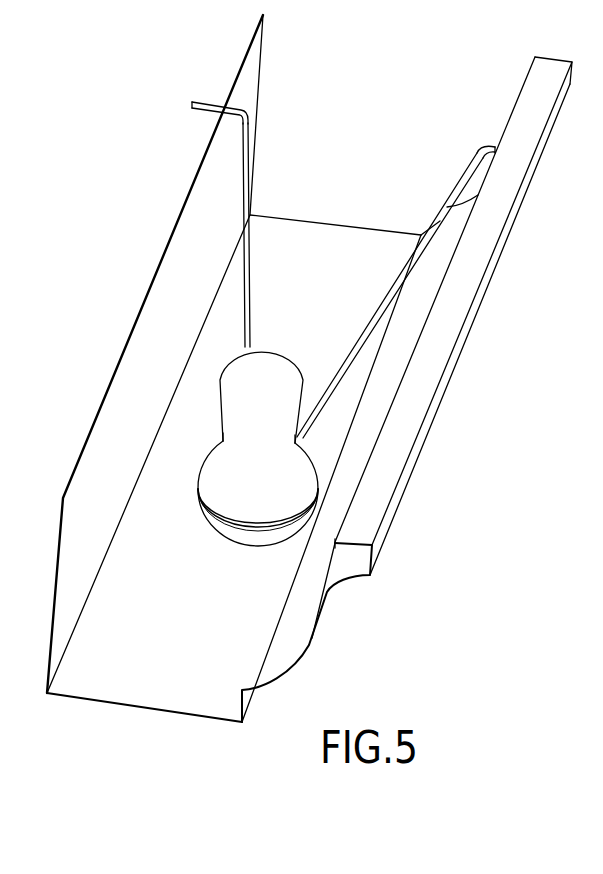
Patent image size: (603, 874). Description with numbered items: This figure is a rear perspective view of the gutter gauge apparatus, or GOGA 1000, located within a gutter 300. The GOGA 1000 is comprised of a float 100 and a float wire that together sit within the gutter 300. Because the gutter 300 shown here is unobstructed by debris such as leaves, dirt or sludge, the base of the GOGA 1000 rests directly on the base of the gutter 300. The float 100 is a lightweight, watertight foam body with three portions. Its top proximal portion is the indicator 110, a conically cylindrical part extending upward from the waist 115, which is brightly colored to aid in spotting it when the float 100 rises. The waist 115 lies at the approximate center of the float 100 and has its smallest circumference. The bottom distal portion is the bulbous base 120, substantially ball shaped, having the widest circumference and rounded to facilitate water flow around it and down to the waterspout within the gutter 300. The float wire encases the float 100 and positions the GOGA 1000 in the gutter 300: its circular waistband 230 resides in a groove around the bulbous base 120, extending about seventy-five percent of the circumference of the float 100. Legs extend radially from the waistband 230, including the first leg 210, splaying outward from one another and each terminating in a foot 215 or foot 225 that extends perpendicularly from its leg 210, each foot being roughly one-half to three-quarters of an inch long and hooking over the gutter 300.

The float 100 is at (197, 476).
The indicator 110 is at (218, 389).
The waist 115 is at (222, 430).
The bulbous base 120 is at (243, 545).
The first leg 210 is at (250, 265).
The foot 215 is at (205, 100).
The foot 225 is at (485, 146).
The waistband 230 is at (213, 513).
The gutter 300 is at (430, 448).
The gutter gauge apparatus (GOGA) 1000 is at (278, 342).